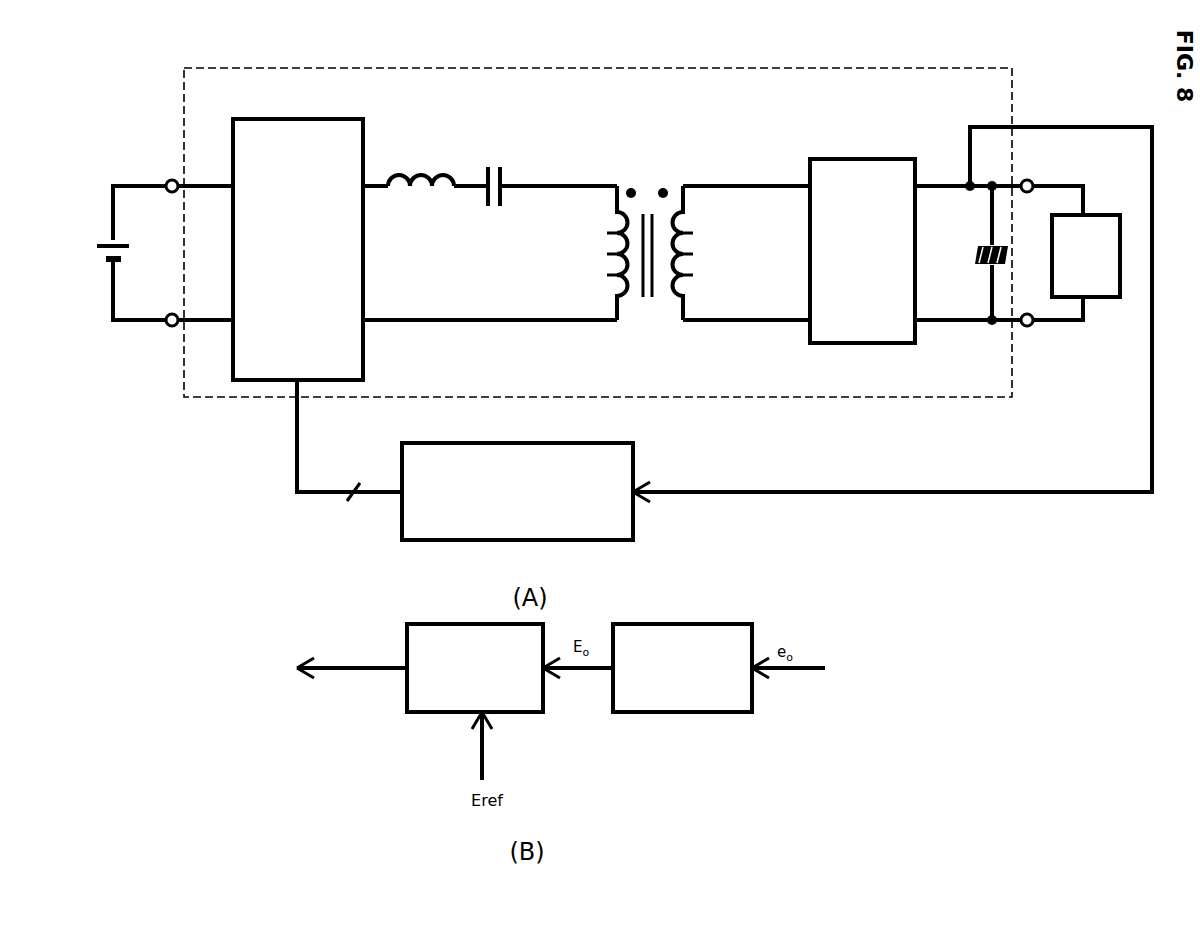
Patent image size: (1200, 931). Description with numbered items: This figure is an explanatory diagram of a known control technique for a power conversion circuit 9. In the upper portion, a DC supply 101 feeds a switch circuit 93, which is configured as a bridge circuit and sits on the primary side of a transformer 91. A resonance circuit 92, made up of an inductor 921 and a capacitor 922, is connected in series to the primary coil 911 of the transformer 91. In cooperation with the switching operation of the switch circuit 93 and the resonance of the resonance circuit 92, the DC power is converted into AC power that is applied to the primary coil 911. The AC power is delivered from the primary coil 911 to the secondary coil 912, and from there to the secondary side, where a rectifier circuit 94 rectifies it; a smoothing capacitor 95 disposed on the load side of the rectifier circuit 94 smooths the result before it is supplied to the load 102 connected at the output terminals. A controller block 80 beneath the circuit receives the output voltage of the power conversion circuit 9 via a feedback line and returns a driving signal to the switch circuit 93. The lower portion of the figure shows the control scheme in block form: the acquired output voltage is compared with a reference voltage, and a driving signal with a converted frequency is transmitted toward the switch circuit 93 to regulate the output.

The power conversion circuit 9 is at (598, 220).
The switch circuit 93 is at (265, 119).
The resonance circuit 92 is at (490, 180).
The inductor 921 is at (420, 205).
The capacitor 922 is at (496, 208).
The transformer 91 is at (586, 244).
The primary coil 911 is at (610, 263).
The secondary coil 912 is at (678, 298).
The rectifier circuit 94 is at (850, 160).
The smoothing capacitor 95 is at (975, 255).
The load 102 is at (1095, 214).
The DC power supply 101 is at (100, 255).
The control circuit 80 is at (483, 443).